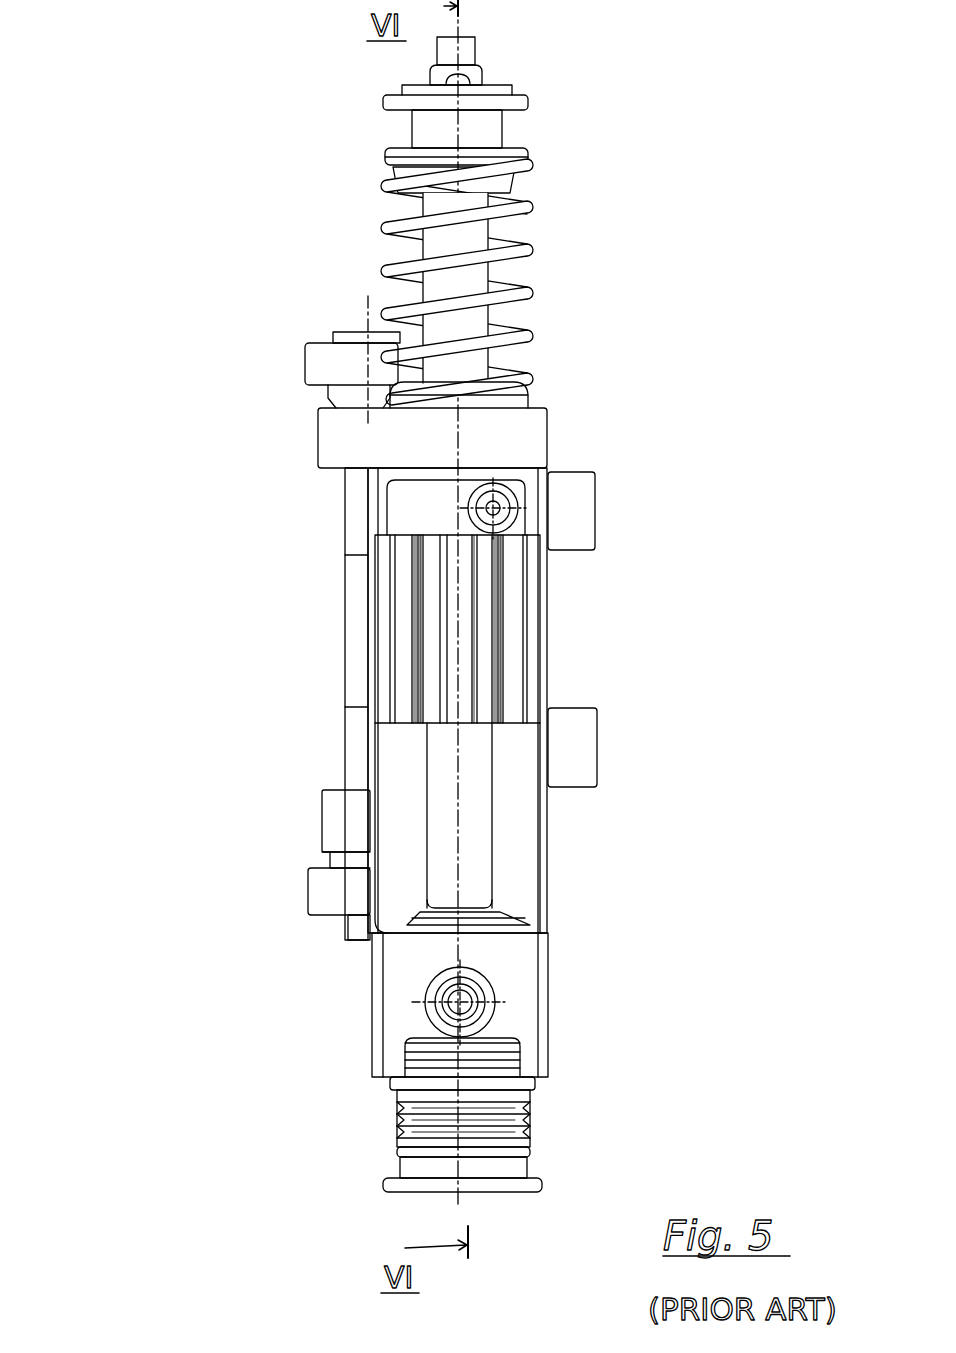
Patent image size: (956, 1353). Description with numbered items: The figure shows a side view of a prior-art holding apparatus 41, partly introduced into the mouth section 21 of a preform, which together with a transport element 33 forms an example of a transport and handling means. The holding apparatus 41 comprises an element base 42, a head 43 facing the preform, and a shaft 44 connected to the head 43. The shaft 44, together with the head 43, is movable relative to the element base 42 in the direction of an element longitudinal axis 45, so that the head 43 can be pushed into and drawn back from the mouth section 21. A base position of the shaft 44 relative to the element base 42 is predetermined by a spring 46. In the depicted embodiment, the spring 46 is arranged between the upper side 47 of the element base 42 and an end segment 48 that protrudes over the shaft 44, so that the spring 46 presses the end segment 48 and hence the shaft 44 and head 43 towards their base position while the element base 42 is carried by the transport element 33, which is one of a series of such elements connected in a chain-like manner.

The mouth section 21 is at (383, 1135).
The transport element 33 is at (152, 444).
The holding apparatus 41 is at (660, 558).
The element base 42 is at (532, 848).
The head 43 is at (578, 1057).
The shaft 44 is at (507, 282).
The element longitudinal axis 45 is at (470, 238).
The spring 46 is at (526, 210).
The upper side 47 is at (531, 400).
The end segment 48 is at (388, 152).